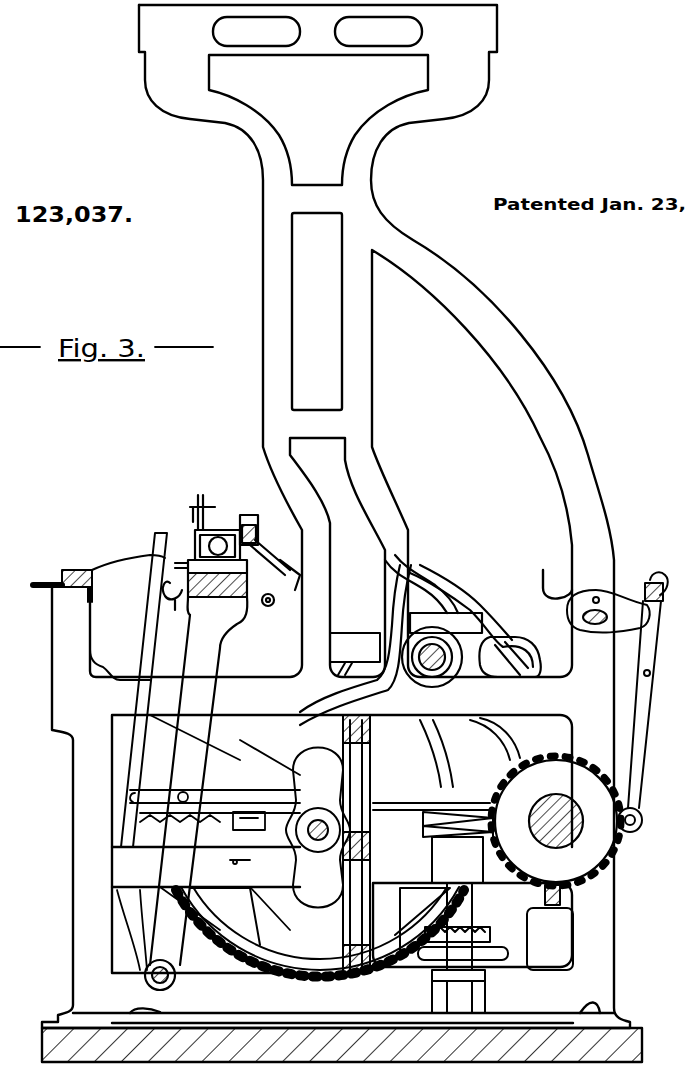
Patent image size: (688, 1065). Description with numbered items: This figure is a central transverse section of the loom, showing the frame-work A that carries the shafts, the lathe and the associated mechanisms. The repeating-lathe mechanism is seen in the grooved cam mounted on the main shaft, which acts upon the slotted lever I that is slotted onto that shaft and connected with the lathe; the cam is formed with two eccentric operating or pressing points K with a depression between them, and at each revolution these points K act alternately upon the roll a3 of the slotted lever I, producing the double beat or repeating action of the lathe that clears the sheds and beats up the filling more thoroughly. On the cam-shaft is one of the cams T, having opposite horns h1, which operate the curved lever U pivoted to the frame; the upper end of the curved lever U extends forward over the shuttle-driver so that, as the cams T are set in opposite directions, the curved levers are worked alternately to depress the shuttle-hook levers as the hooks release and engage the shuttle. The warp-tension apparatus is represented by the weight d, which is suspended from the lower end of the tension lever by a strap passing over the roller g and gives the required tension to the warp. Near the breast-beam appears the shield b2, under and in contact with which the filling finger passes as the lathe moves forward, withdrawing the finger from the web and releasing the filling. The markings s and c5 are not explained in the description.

The frame-work A is at (336, 516).
The slotted lever I is at (355, 654).
The eccentric operating points K is at (348, 847).
The curved lever U is at (283, 740).
The cam T is at (318, 828).
The horns h1 is at (320, 827).
The weight d is at (550, 939).
The spring s is at (470, 908).
The roller g is at (171, 663).
The shield b2 is at (99, 615).
The clamp c5 is at (178, 556).
The roll a3 is at (174, 581).